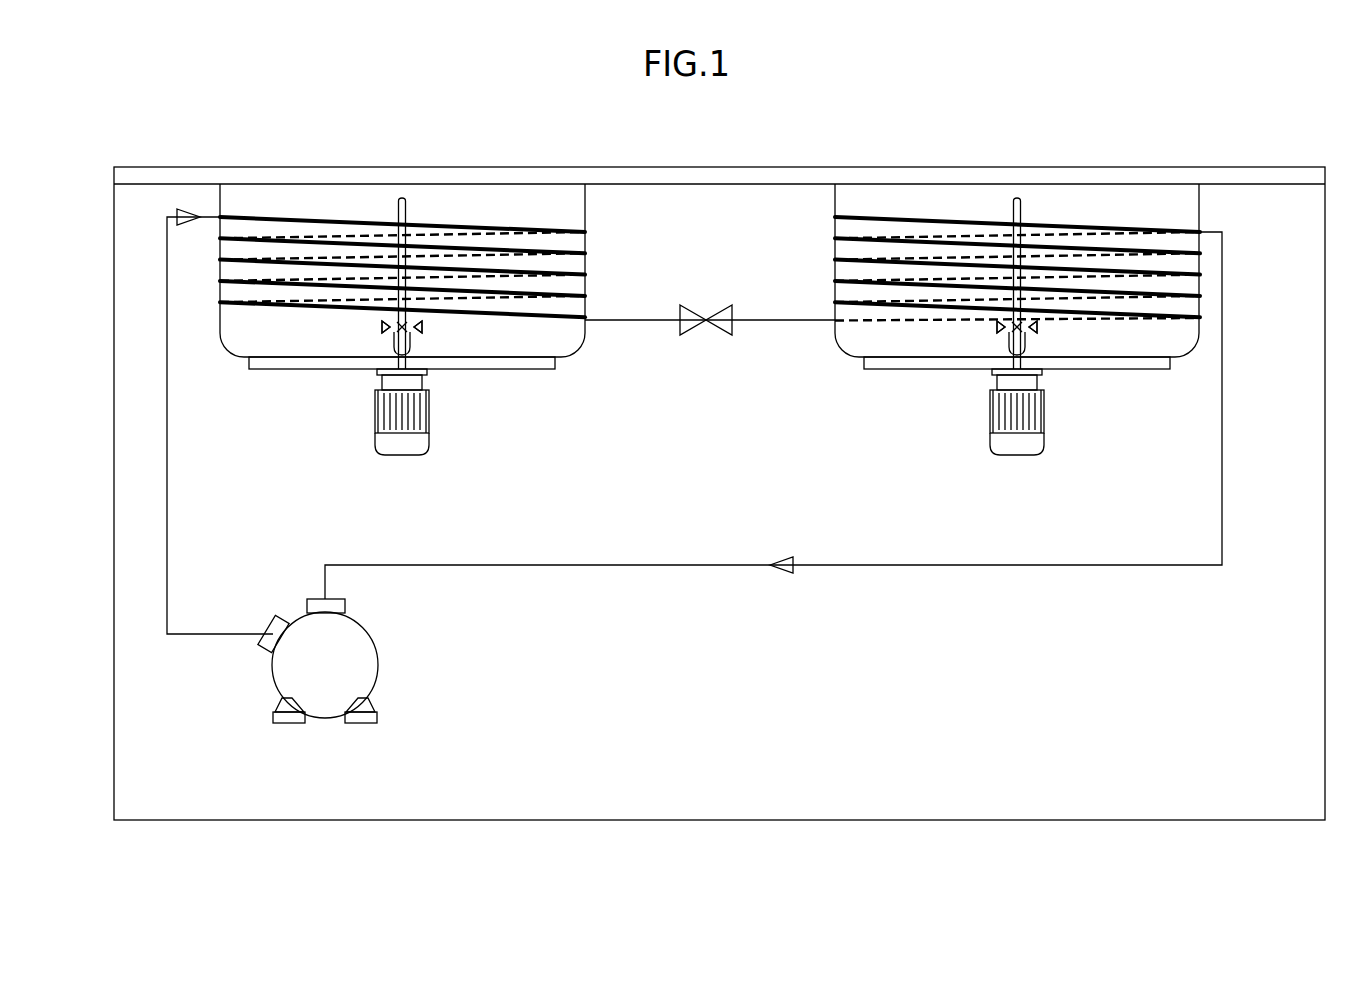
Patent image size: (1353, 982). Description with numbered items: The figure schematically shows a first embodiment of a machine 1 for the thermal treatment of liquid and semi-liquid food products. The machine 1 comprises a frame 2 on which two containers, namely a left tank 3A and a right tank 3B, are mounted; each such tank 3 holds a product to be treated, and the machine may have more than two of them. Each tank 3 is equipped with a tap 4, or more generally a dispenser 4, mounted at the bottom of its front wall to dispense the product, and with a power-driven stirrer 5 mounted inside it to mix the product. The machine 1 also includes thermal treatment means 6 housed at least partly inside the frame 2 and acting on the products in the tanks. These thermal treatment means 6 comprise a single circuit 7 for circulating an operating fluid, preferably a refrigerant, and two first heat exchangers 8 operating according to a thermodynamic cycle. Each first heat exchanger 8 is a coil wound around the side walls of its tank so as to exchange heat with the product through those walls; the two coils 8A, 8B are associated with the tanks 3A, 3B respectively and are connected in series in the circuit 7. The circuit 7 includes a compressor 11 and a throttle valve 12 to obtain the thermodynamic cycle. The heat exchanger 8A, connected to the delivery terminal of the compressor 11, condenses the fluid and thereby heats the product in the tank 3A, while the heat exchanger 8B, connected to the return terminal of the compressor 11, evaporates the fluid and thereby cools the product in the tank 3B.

The machine 1 is at (1202, 123).
The frame 2 is at (1117, 762).
The tank 3 is at (709, 237).
The first tank 3A is at (518, 213).
The second tank 3B is at (1128, 213).
The tap 4 is at (413, 345).
The power-driven stirrer 5 is at (397, 322).
The thermal treatment means 6 is at (548, 658).
The circuit 7 is at (712, 572).
The first heat exchanger 8 is at (710, 201).
The first heat exchanger 8A is at (256, 215).
The first heat exchanger 8B is at (865, 213).
The compressor 11 is at (328, 689).
The throttle valve 12 is at (704, 308).